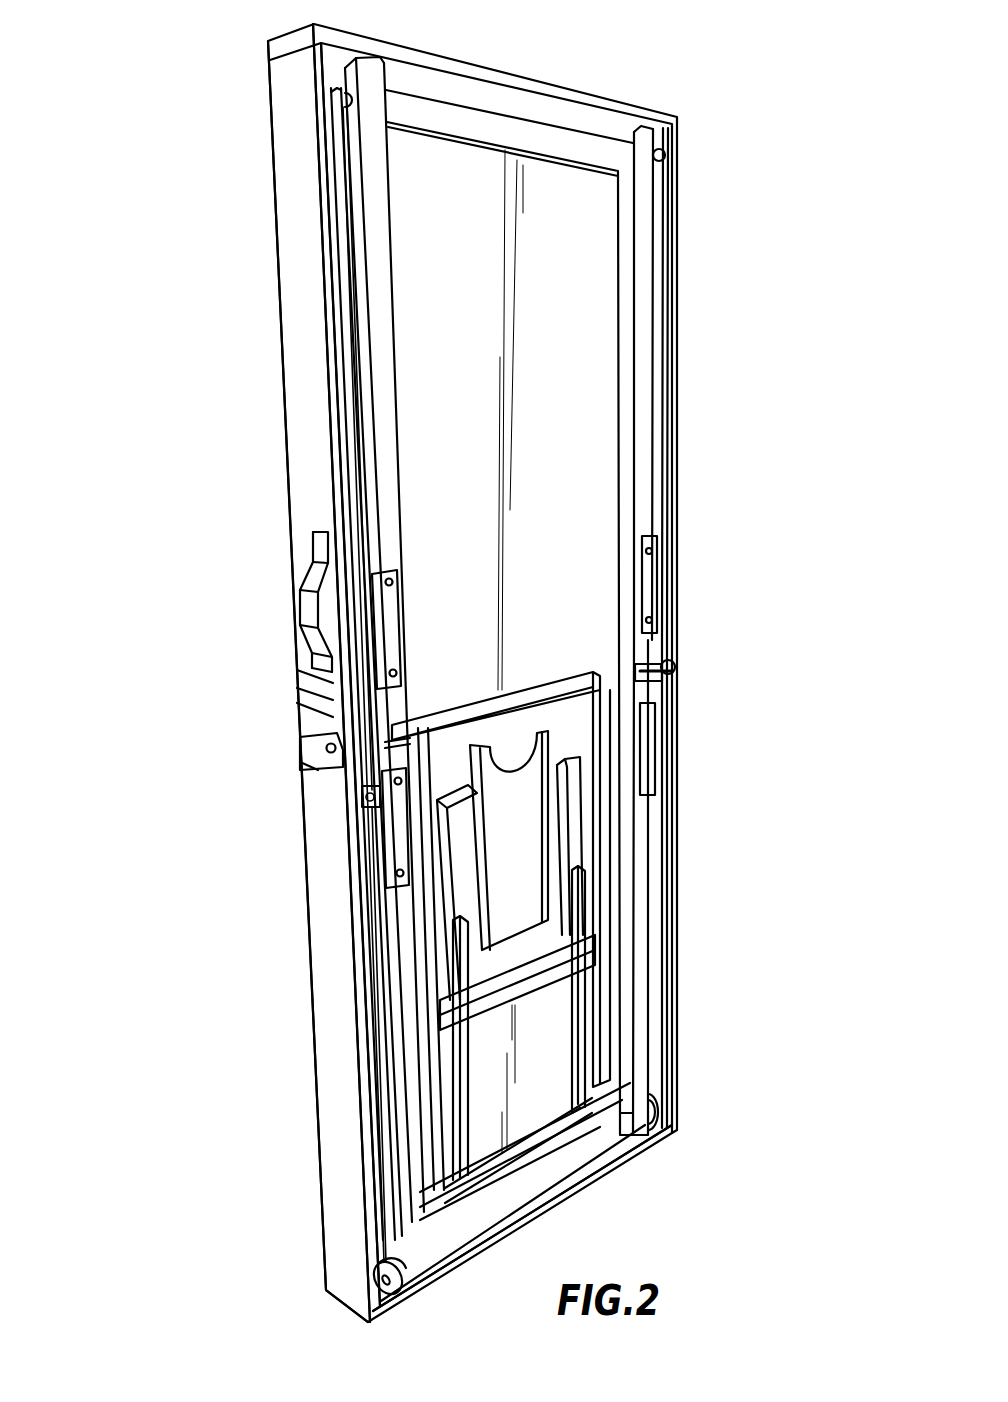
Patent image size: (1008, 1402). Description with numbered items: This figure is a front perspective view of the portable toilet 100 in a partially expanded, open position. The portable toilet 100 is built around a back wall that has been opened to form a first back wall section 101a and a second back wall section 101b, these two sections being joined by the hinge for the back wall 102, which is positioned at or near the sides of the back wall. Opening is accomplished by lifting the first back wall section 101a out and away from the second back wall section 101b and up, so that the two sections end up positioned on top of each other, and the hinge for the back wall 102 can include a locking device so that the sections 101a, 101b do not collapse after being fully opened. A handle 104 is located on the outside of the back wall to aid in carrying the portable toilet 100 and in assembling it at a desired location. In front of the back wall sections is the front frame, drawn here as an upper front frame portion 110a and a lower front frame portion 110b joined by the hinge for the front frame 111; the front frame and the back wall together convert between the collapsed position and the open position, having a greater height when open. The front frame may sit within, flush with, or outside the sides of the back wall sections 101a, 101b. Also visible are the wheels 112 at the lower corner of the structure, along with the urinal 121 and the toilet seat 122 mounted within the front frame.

The portable toilet 100 is at (183, 78).
The first back wall section 101a is at (302, 222).
The second back wall section 101b is at (325, 835).
The hinge for the back wall 102 is at (316, 730).
The handle 104 is at (308, 610).
The front frame section 110a is at (643, 198).
The front frame section 110b is at (655, 983).
The hinge for the front frame 111 is at (394, 777).
The wheels 112 is at (655, 1118).
The urinal 121 is at (527, 816).
The toilet seat 122 is at (578, 840).